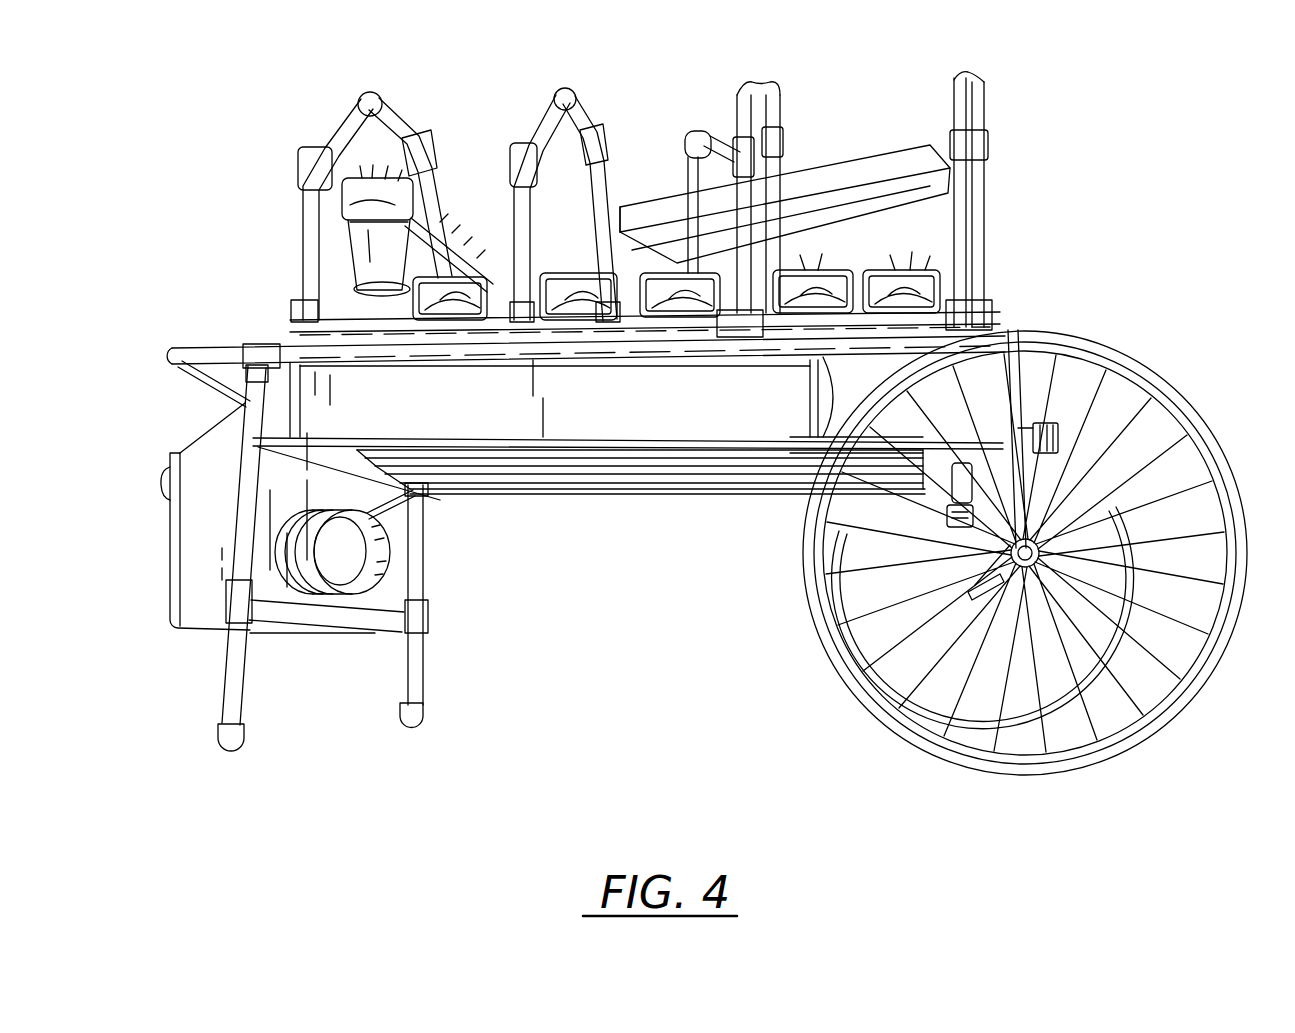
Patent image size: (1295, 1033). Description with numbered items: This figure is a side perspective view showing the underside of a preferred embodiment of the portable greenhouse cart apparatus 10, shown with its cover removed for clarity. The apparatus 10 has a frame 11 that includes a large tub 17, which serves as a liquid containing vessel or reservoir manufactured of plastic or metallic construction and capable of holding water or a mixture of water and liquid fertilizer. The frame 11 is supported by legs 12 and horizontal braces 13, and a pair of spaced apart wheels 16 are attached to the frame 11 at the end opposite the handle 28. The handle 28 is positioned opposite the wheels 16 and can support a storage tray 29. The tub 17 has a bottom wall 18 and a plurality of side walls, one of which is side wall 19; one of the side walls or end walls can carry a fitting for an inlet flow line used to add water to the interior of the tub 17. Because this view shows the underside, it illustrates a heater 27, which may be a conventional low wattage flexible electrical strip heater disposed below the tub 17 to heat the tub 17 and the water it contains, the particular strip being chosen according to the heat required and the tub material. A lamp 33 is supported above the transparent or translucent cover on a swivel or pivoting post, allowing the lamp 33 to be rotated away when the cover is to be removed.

The portable greenhouse cart apparatus 10 is at (816, 110).
The frame 11 is at (750, 487).
The legs 12 is at (243, 690).
The horizontal braces 13 is at (373, 633).
The wheels 16 is at (1093, 340).
The tub 17 is at (655, 413).
The bottom wall 18 is at (309, 440).
The side wall 19 is at (583, 420).
The heater 27 is at (417, 455).
The handle 28 is at (191, 290).
The storage tray 29 is at (200, 590).
The lamp 33 is at (872, 165).